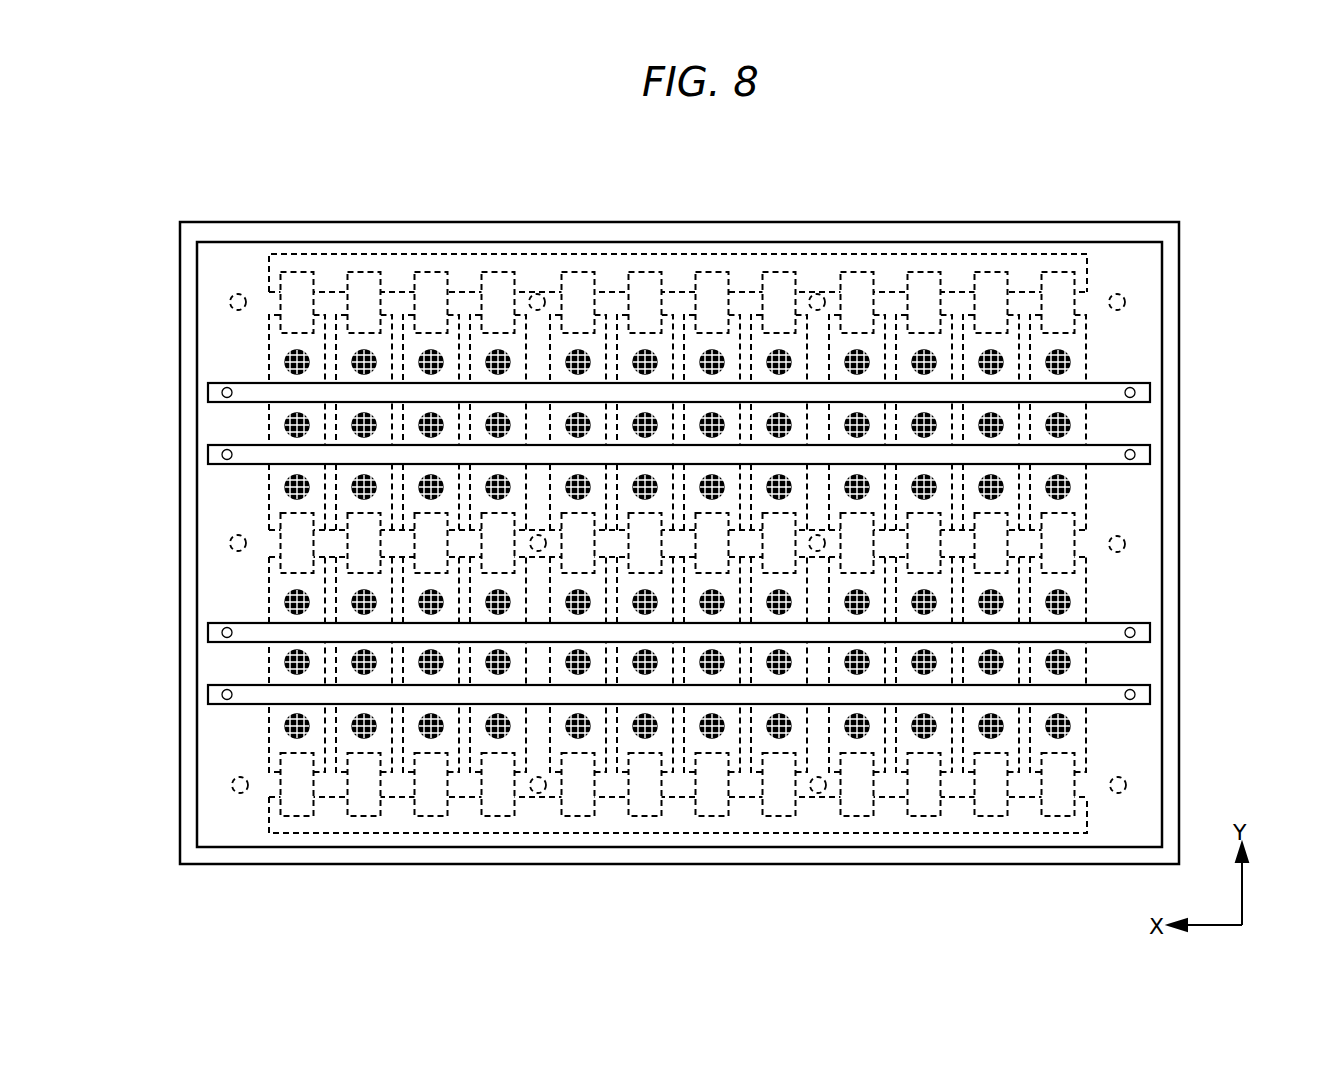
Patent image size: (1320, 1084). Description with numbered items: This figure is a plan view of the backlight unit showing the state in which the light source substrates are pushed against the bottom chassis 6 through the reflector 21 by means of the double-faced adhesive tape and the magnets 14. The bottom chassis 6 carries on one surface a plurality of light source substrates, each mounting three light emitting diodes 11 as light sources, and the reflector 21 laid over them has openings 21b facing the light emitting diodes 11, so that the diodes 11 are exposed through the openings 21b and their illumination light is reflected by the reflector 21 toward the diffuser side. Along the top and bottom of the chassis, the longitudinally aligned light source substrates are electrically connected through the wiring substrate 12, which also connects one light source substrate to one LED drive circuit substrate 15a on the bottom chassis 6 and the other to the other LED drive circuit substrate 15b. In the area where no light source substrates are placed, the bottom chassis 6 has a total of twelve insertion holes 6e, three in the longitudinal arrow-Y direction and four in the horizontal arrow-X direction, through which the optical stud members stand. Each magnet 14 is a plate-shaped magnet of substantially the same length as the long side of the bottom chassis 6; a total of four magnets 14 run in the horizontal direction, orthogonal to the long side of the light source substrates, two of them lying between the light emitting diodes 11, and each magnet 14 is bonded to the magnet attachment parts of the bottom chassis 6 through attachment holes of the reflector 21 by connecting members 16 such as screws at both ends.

The bottom chassis 6 is at (180, 733).
The insertion holes 6e is at (229, 302).
The light emitting diodes 11 is at (1068, 354).
The wiring substrate 12 is at (1058, 290).
The magnets 14 is at (214, 455).
The LED drive circuit substrate 15a is at (650, 264).
The LED drive circuit substrate 15b is at (668, 825).
The connecting members 16 is at (222, 393).
The reflector 21 is at (1148, 795).
The openings 21b is at (1070, 364).